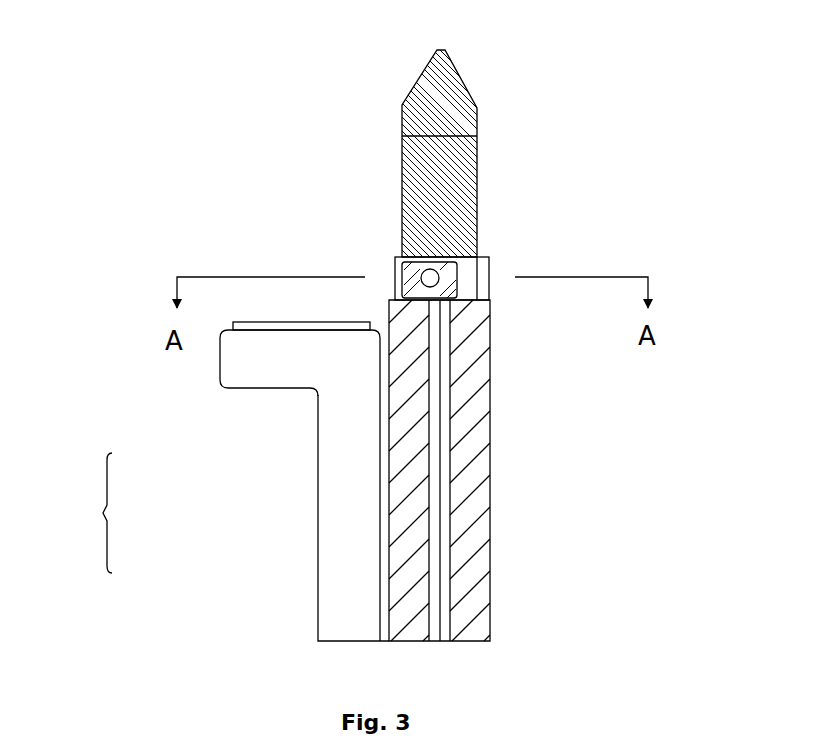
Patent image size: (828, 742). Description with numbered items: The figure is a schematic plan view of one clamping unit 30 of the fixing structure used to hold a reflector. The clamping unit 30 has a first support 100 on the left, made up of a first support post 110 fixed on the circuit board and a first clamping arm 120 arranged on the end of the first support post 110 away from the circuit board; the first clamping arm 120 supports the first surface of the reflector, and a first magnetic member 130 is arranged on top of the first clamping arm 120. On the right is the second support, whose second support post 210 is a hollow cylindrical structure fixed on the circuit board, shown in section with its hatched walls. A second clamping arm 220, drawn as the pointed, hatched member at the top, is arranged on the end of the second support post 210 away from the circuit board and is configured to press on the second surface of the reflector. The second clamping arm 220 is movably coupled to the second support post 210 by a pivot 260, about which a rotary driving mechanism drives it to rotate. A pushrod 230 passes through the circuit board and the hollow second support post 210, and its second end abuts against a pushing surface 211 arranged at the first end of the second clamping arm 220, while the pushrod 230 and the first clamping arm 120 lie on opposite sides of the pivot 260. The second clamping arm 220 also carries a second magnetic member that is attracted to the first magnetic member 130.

The clamping unit 30 is at (200, 115).
The first support 100 is at (217, 485).
The first support post 110 is at (330, 509).
The first clamping arm 120 is at (255, 377).
The first magnetic member 130 is at (256, 322).
The second support post 210 is at (488, 436).
The pushing surface 211 is at (452, 310).
The second clamping arm 220 is at (478, 200).
The pushrod 230 is at (440, 599).
The pivot 260 is at (402, 218).